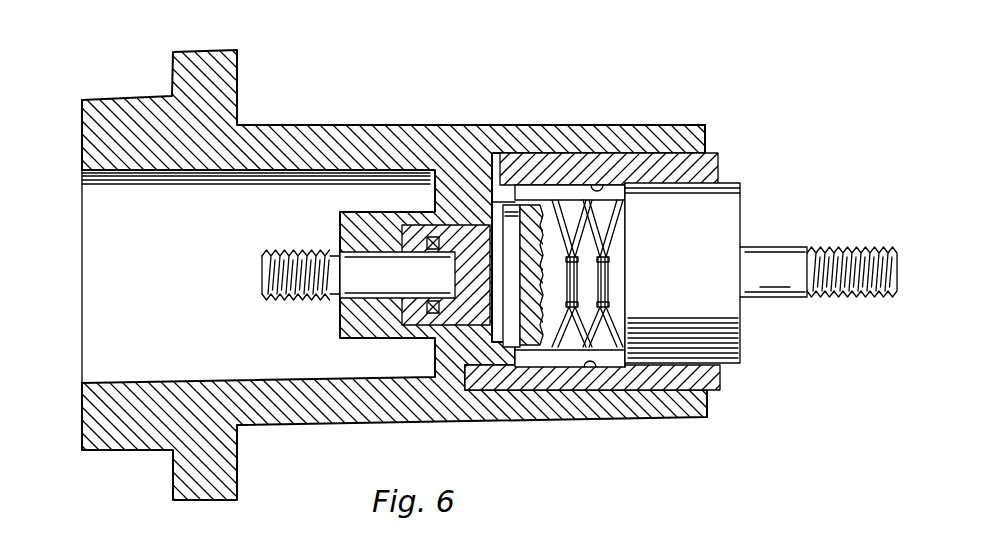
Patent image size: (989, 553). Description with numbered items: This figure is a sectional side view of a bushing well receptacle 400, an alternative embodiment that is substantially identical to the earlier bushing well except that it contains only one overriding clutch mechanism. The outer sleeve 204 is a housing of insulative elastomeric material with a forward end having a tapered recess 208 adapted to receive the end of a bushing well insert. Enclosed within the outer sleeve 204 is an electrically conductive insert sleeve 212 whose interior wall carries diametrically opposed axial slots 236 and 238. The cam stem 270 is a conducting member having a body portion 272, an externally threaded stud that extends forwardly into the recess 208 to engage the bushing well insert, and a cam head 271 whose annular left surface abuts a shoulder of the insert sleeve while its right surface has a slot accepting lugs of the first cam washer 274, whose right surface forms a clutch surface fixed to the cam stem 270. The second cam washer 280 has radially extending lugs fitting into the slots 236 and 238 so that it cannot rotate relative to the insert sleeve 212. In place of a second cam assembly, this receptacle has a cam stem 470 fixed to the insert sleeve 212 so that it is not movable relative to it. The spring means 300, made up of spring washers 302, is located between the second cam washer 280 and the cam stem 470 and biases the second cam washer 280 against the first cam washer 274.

The bushing well receptacle 400 is at (103, 85).
The outer sleeve 204 is at (98, 122).
The tapered recess 208 is at (108, 178).
The insert sleeve 212 is at (705, 175).
The cam stem 270 is at (268, 309).
The cam head 271 is at (490, 325).
The body portion 272 is at (280, 252).
The first cam washer 274 is at (520, 215).
The second cam washer 280 is at (543, 340).
The slot 238 is at (600, 188).
The spring means 300 is at (614, 276).
The spring washer 302 is at (605, 215).
The slot 236 is at (588, 353).
The cam stem 470 is at (849, 238).